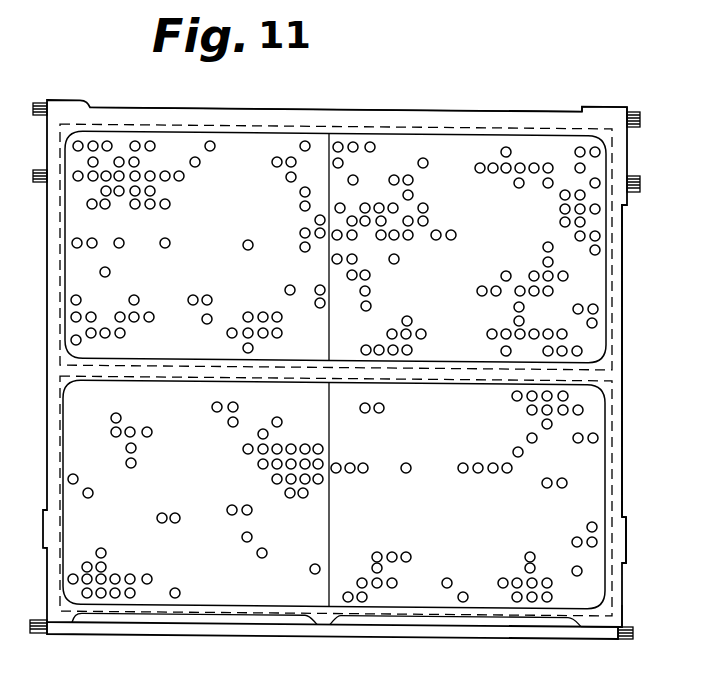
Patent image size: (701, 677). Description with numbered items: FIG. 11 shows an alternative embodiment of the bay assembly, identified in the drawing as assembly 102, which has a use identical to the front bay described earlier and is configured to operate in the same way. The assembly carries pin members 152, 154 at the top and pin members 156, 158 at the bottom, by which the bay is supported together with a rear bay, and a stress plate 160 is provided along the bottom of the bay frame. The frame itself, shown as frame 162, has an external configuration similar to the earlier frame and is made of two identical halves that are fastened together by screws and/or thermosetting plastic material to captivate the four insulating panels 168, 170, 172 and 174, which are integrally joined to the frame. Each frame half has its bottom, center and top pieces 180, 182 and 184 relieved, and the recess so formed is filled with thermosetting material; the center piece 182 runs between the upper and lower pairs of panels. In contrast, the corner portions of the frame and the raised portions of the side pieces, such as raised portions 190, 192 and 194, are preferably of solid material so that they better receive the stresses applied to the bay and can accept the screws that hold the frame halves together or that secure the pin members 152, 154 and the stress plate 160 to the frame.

The circuit board assembly 102 is at (462, 104).
The pin member 152 is at (640, 120).
The pin member 154 is at (33, 109).
The pin member 156 is at (630, 640).
The pin member 158 is at (38, 634).
The stress plate 160 is at (498, 635).
The frame 162 is at (621, 425).
The insulating panel 168 is at (208, 235).
The insulating panel 170 is at (192, 484).
The insulating panel 172 is at (458, 516).
The insulating panel 174 is at (495, 235).
The bottom piece 180 is at (412, 618).
The center piece 182 is at (403, 374).
The top piece 184 is at (355, 116).
The raised portion 190 is at (606, 117).
The raised portion 192 is at (621, 533).
The raised portion 194 is at (601, 623).